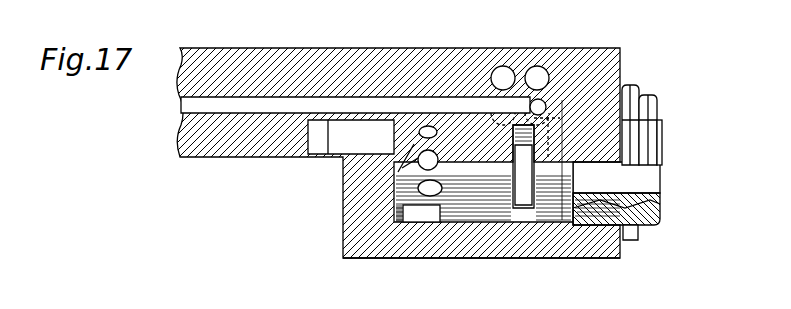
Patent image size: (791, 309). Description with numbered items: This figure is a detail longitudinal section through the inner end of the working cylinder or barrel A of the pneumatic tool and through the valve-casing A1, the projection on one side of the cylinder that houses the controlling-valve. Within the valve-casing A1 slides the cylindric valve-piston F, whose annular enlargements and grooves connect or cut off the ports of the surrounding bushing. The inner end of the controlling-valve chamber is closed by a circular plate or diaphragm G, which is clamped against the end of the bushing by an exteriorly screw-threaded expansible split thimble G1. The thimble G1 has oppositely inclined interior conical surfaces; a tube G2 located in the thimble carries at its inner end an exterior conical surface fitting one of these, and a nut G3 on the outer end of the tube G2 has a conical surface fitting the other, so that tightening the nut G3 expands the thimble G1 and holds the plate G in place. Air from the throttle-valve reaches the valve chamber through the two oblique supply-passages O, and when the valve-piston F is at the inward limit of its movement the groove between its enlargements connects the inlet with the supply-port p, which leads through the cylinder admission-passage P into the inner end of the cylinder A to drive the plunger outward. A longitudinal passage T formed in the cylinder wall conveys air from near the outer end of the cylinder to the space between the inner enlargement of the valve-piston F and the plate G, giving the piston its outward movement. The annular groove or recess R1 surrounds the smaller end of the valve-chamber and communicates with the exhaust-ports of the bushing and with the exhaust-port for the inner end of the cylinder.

The longitudinal passage T is at (272, 108).
The oblique supply-passages O is at (504, 67).
The cylinder admission-passage P is at (534, 140).
The supply-port p is at (535, 188).
The valve-piston F is at (483, 160).
The circular plate or diaphragm G is at (577, 178).
The tube G2 is at (661, 176).
The nut G3 is at (661, 214).
The expansible split thimble G1 is at (633, 238).
The annular groove or recess R1 is at (420, 224).
The working cylinder or barrel A is at (496, 259).
The valve-casing A1 is at (585, 261).